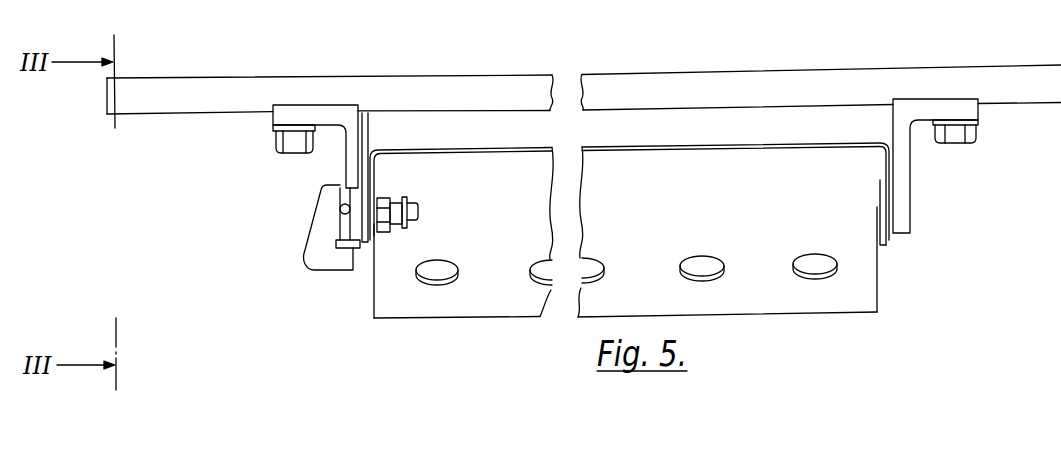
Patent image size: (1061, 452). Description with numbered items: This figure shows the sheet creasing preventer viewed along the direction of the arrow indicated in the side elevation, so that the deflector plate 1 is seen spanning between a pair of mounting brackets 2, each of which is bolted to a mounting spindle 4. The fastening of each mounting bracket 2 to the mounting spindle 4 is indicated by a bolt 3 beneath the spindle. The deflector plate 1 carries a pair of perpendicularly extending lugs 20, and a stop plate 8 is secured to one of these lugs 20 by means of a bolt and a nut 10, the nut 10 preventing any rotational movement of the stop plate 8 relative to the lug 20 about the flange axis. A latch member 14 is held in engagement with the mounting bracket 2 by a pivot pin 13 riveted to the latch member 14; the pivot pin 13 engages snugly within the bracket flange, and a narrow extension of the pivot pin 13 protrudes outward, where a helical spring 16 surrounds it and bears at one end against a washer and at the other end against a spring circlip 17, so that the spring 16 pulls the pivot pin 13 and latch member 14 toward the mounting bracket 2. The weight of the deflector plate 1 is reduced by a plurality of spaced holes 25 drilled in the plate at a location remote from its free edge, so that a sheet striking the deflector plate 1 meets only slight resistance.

The deflector plate 1 is at (858, 270).
The mounting bracket 2 is at (346, 168).
The fastening bolt 3 is at (277, 117).
The mounting spindle 4 is at (198, 100).
The stop plate 8 is at (355, 249).
The nut 10 is at (379, 229).
The pivot pin 13 is at (421, 211).
The latch member 14 is at (327, 199).
The helical spring 16 is at (404, 197).
The spring circlip 17 is at (413, 204).
The lug 20 is at (371, 189).
The holes 25 is at (801, 264).